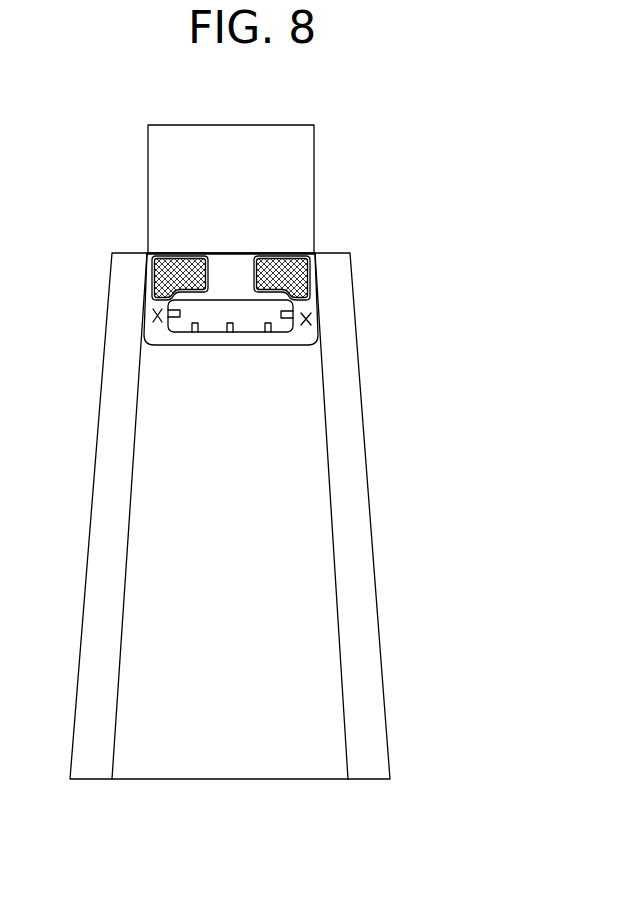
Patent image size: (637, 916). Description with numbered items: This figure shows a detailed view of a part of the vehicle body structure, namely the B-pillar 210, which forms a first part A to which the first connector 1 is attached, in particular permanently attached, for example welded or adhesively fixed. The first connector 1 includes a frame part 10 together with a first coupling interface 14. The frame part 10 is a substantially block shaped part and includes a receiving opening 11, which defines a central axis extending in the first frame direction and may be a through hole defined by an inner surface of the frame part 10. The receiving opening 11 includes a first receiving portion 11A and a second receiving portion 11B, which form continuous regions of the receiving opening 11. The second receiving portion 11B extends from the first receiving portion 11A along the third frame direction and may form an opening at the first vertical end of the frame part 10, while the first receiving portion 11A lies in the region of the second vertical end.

The first connector 1 is at (219, 278).
The frame part 10 is at (242, 342).
The receiving opening 11 is at (172, 333).
The first receiving portion 11A is at (155, 329).
The second receiving portion 11B is at (200, 275).
The first coupling interface 14 is at (309, 318).
The first part A is at (281, 516).
The B-pillar 210 is at (365, 447).